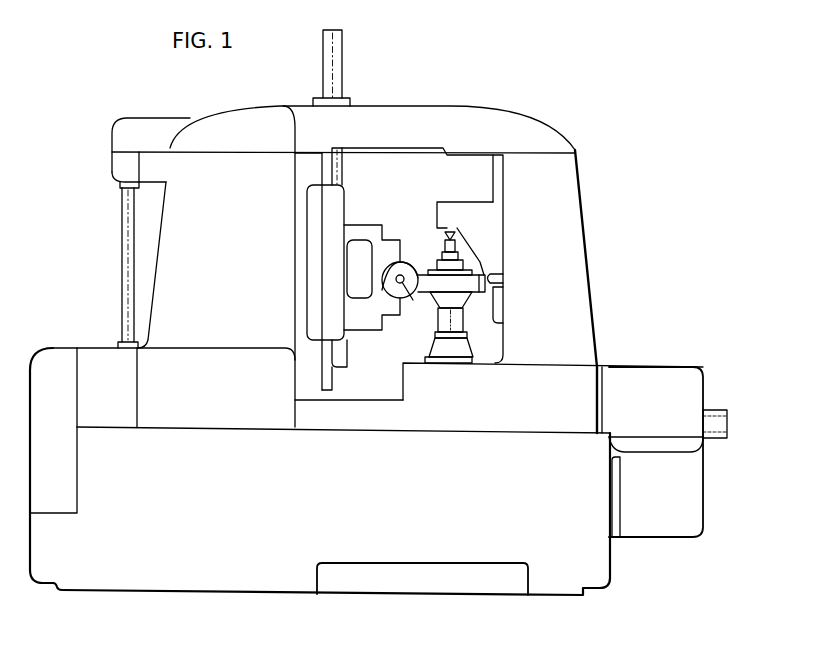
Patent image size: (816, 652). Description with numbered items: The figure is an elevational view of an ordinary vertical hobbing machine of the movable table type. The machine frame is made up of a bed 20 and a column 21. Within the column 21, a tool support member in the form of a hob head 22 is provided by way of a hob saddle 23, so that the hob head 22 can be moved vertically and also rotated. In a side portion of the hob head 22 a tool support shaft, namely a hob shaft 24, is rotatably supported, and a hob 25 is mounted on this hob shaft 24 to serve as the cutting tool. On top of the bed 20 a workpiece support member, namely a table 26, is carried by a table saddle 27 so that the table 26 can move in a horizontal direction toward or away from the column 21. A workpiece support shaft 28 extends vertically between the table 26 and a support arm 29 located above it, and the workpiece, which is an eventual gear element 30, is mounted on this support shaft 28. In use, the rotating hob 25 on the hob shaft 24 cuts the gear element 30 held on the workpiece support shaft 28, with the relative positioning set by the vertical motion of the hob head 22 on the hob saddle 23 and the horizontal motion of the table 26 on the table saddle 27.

The bed 20 is at (122, 590).
The column 21 is at (153, 325).
The hob head 22 is at (362, 230).
The hob saddle 23 is at (340, 192).
The hob shaft 24 is at (403, 302).
The hob 25 is at (413, 265).
The table 26 is at (440, 363).
The table saddle 27 is at (596, 338).
The workpiece support shaft 28 is at (456, 240).
The support arm 29 is at (460, 206).
The gear element 30 is at (495, 278).